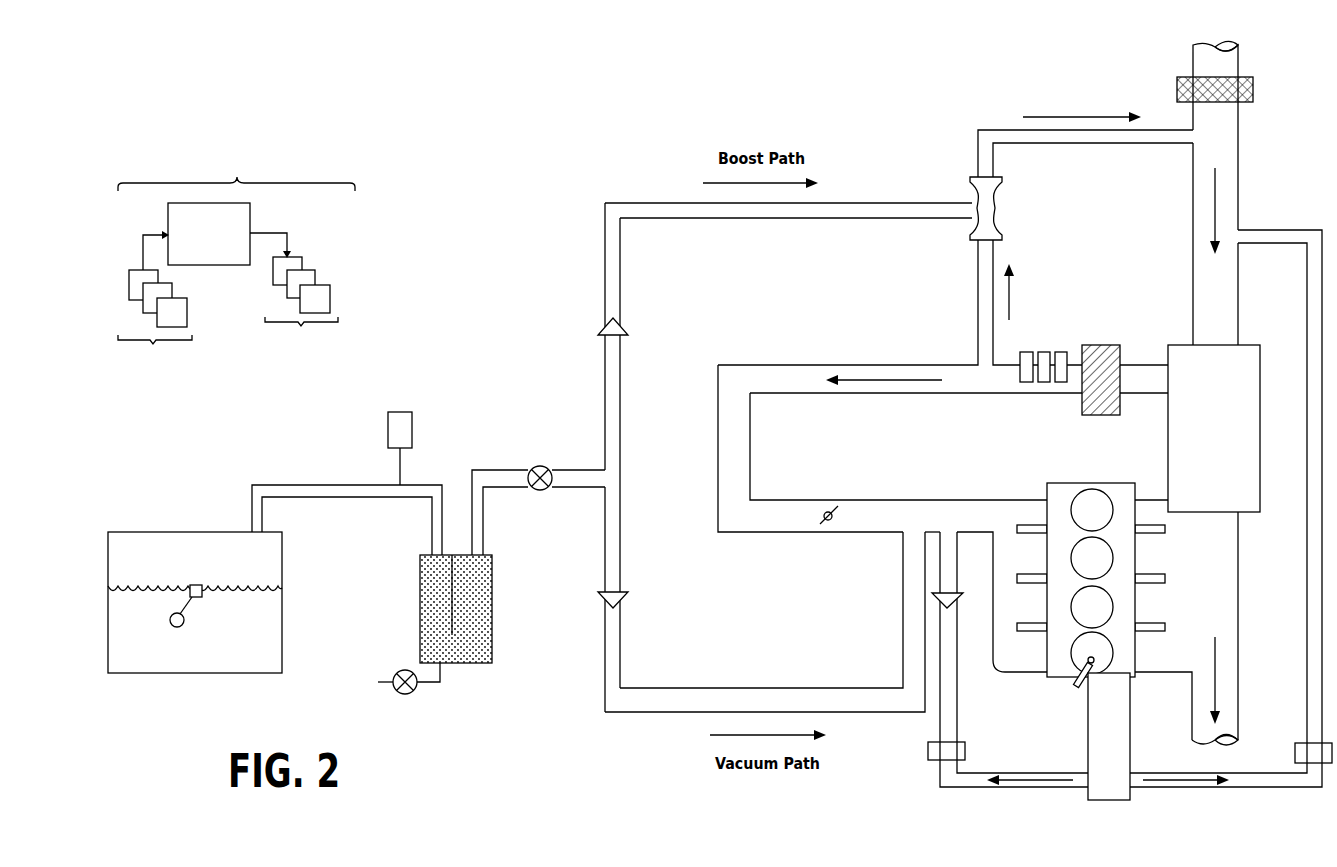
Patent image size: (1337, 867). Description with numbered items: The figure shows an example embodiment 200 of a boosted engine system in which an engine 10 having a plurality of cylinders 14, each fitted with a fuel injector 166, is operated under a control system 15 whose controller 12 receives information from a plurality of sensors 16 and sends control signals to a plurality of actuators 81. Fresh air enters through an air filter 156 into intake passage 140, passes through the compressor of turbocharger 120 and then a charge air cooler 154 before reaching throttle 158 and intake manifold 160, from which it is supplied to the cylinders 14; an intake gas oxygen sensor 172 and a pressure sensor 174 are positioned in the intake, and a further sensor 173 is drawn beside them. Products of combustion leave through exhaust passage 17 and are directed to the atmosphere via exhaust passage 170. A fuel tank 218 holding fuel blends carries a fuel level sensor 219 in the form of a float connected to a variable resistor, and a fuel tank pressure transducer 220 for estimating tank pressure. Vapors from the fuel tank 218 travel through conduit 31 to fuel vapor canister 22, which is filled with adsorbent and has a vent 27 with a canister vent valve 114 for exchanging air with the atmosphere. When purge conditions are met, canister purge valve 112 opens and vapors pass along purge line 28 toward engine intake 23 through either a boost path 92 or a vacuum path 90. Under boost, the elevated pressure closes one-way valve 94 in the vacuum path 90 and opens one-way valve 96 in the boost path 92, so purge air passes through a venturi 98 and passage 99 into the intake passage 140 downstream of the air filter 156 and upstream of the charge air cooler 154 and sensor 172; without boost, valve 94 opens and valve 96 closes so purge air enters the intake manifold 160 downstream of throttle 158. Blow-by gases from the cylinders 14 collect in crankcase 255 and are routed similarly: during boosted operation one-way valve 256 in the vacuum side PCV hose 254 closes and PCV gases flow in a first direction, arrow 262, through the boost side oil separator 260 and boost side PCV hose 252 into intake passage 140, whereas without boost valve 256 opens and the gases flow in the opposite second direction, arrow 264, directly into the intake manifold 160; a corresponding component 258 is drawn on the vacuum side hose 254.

The engine system embodiment 200 is at (210, 88).
The control system 15 is at (236, 163).
The controller 12 is at (209, 234).
The sensors 16 is at (155, 307).
The actuators 81 is at (294, 300).
The fuel tank 218 is at (282, 632).
The fuel level sensor 219 is at (202, 597).
The conduit 31 is at (285, 485).
The fuel tank pressure transducer 220 is at (412, 421).
The fuel vapor canister 22 is at (482, 664).
The purge line 28 is at (565, 470).
The canister purge valve 112 is at (544, 490).
The vent 27 is at (378, 682).
The canister vent valve 114 is at (408, 694).
The boost path 92 is at (757, 220).
The one-way valve 96 is at (617, 323).
The one-way valve 94 is at (620, 601).
The vacuum path 90 is at (725, 688).
The engine intake 23 is at (832, 323).
The venturi 98 is at (990, 215).
The passage 99 is at (1002, 130).
The intake passage 140 is at (1193, 228).
The air filter 156 is at (1253, 95).
The boost side PCV hose 252 is at (1258, 230).
The intake gas oxygen sensor 172 is at (1027, 352).
The intake sensor 173 is at (1044, 352).
The pressure sensor 174 is at (1061, 352).
The charge air cooler 154 is at (1103, 345).
The turbocharger 120 is at (1227, 438).
The intake manifold 160 is at (1020, 555).
The throttle valve 158 is at (831, 521).
The engine 10 is at (1018, 685).
The cylinder 14 is at (1106, 499).
The fuel injector 166 is at (1075, 688).
The crankcase 255 is at (1124, 750).
The exhaust passage 17 is at (1237, 595).
The branched parallel exhaust passage 170 is at (1240, 722).
The vacuum side PCV hose 254 is at (957, 695).
The one-way valve 256 is at (955, 601).
The crankcase ventilation sensor 258 is at (930, 762).
The first direction arrow 262 is at (1010, 773).
The second direction arrow 264 is at (1155, 773).
The boost side oil separator 260 is at (1295, 755).